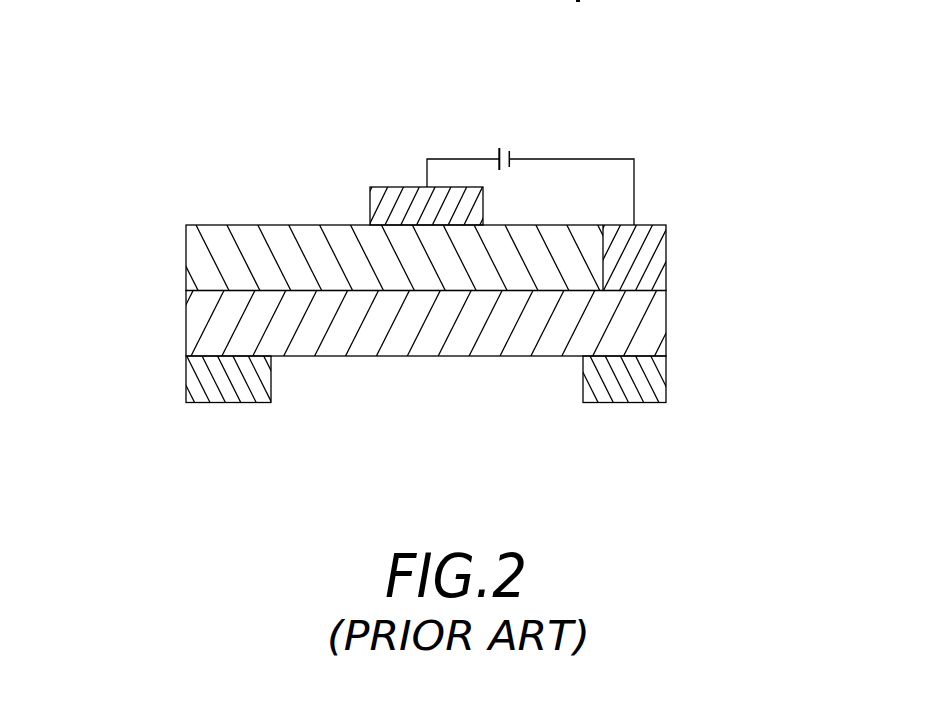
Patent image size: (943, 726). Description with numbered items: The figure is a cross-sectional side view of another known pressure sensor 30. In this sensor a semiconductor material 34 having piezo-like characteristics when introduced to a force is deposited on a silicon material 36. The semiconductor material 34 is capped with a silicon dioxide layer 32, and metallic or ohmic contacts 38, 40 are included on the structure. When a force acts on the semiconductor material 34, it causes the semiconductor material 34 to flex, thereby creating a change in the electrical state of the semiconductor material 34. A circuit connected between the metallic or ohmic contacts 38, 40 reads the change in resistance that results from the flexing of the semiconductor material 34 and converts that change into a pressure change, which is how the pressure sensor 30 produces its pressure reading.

The pressure sensor 30 is at (715, 124).
The silicon dioxide layer 32 is at (202, 255).
The semiconductor material 34 is at (655, 323).
The silicon material 36 is at (200, 389).
The metallic or ohmic contact 38 is at (382, 198).
The metallic or ohmic contact 40 is at (657, 250).